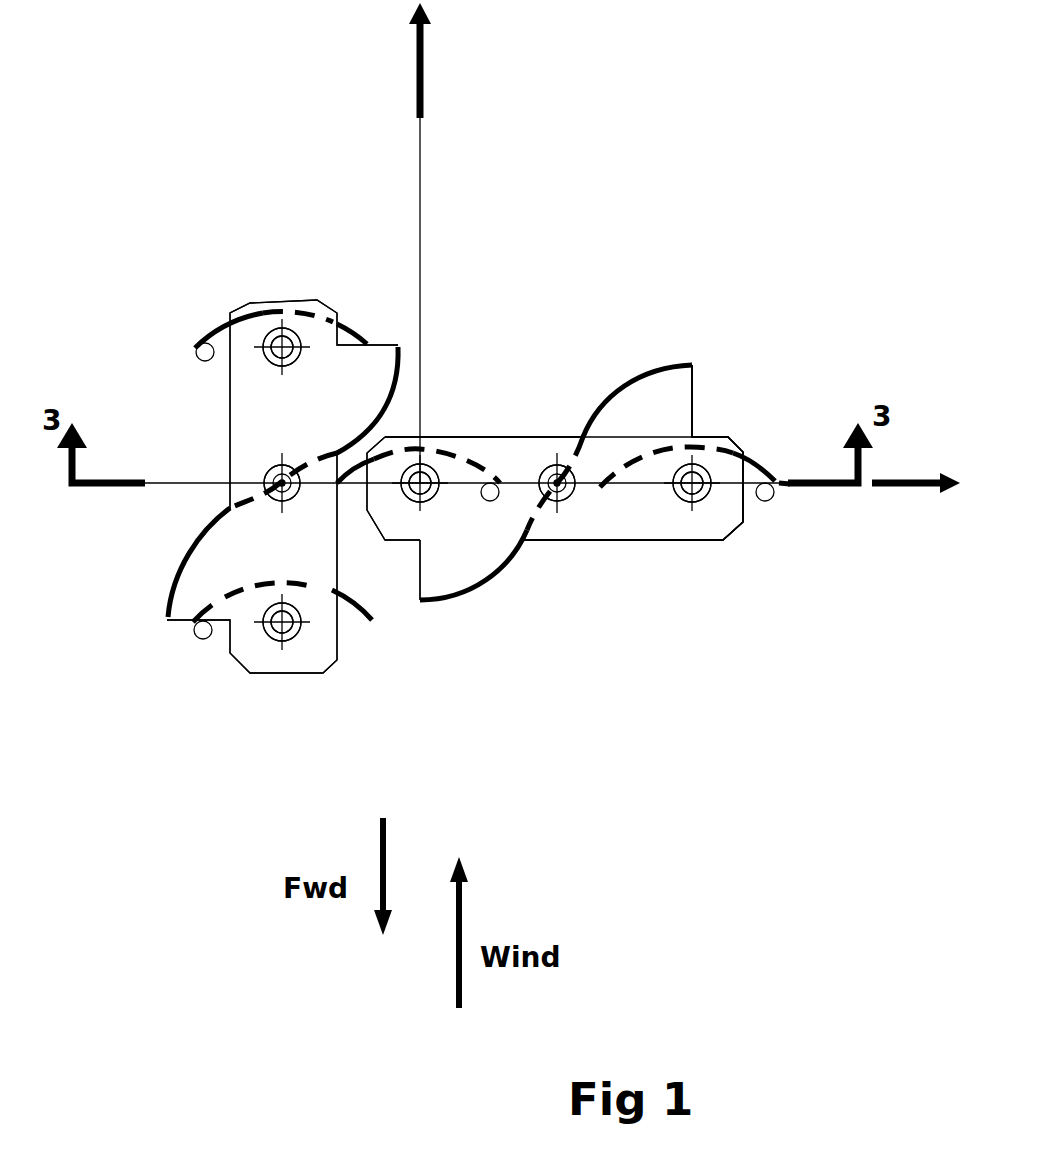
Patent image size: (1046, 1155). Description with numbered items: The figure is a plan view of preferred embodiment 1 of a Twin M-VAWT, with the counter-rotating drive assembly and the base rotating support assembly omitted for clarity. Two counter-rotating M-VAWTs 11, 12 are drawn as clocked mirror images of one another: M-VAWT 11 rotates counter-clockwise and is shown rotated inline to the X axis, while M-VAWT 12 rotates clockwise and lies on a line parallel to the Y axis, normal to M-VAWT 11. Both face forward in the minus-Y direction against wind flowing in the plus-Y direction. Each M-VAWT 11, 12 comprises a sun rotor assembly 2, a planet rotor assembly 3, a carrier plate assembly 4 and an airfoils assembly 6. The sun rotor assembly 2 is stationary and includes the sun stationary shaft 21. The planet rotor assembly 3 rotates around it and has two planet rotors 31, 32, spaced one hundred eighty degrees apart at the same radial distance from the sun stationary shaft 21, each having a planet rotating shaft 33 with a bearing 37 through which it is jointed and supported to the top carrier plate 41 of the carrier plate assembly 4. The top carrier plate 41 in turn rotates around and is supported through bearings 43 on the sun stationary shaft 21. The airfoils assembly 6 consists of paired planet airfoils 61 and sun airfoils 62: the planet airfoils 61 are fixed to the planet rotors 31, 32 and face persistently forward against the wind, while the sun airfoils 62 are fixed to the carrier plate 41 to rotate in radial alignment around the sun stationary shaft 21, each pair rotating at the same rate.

The preferred embodiment 1 is at (802, 93).
The M-VAWT 11 is at (792, 157).
The M-VAWT 12 is at (197, 117).
The sun rotor assembly 2 is at (765, 748).
The planet rotor assembly 3 is at (788, 613).
The carrier plate assembly 4 is at (702, 674).
The airfoils assembly 6 is at (733, 648).
The sun stationary shaft 21 is at (280, 481).
The bearings 43 is at (358, 391).
The planet rotor 31 is at (262, 310).
The planet rotor 32 is at (272, 630).
The planet rotating shaft 33 is at (414, 522).
The bearing 37 is at (410, 555).
The top carrier plate 41 is at (323, 673).
The planet airfoil 61 is at (352, 330).
The sun airfoil 62 is at (398, 345).